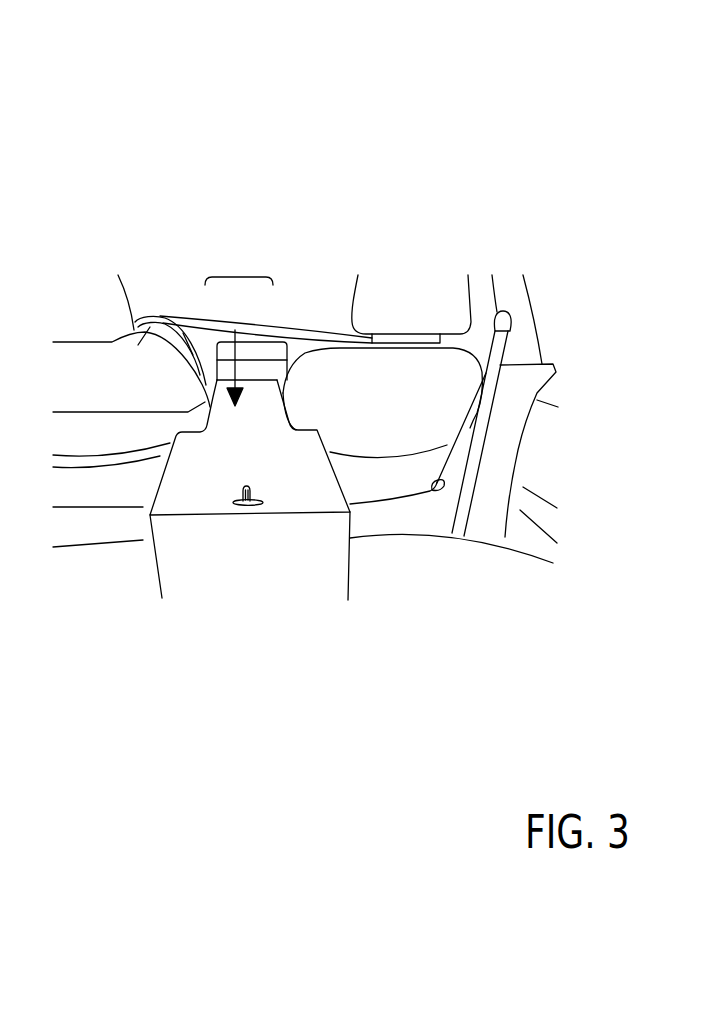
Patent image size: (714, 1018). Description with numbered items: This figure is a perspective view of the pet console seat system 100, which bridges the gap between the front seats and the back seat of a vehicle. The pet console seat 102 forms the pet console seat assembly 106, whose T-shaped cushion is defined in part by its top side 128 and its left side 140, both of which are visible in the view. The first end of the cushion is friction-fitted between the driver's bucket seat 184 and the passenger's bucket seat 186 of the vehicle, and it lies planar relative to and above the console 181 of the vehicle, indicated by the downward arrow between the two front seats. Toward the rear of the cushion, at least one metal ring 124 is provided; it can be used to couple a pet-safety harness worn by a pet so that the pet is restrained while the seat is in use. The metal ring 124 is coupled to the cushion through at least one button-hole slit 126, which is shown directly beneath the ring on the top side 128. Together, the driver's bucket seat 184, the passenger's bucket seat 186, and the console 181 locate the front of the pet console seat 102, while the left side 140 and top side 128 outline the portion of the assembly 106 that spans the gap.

The pet console seat system 100 is at (500, 112).
The pet console seat 102 is at (313, 492).
The pet console seat assembly 106 is at (368, 563).
The metal ring 124 is at (242, 489).
The button-hole slit 126 is at (235, 503).
The top side 128 is at (258, 461).
The left side 140 is at (152, 564).
The console 181 is at (235, 330).
The driver's bucket seat 184 is at (133, 389).
The passenger's bucket seat 186 is at (415, 414).